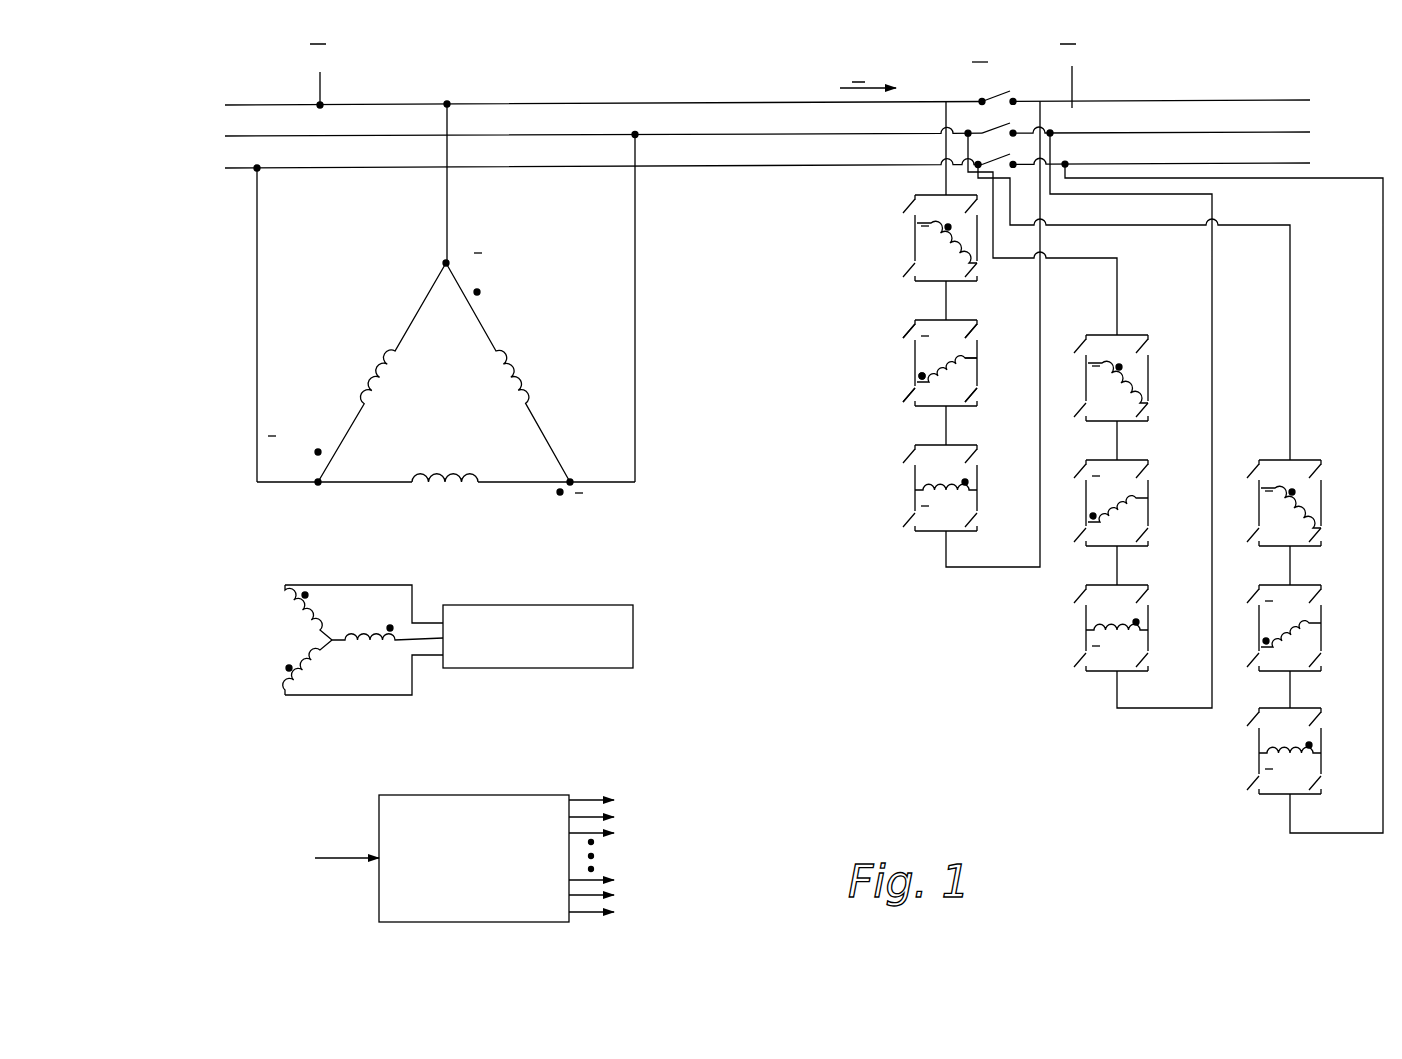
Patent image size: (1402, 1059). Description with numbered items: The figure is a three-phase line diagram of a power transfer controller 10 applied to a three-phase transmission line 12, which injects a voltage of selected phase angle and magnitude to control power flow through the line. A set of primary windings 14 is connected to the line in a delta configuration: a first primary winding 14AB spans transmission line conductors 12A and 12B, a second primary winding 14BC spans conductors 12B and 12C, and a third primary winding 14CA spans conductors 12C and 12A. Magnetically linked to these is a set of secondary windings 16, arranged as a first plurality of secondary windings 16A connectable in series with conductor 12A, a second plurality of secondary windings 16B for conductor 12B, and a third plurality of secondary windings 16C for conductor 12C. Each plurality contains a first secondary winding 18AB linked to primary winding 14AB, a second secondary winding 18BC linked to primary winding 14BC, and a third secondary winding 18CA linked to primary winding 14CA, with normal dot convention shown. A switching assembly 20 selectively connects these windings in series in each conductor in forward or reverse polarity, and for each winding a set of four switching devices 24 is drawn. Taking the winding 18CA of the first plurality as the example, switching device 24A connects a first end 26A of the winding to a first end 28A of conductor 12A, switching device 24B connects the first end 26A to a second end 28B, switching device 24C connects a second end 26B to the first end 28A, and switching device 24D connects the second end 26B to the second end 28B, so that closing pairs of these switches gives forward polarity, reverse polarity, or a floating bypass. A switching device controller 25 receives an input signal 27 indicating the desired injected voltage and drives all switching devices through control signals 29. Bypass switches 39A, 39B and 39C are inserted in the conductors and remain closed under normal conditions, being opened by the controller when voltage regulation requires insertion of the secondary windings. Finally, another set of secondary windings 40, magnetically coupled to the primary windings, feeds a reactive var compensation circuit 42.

The power transfer controller 10 is at (235, 297).
The three-phase transmission line 12 is at (788, 106).
The transmission line conductor 12A is at (340, 104).
The transmission line conductor 12B is at (330, 135).
The transmission line conductor 12C is at (318, 167).
The set of primary windings 14 is at (434, 366).
The first primary winding 14AB is at (502, 352).
The second primary winding 14BC is at (500, 483).
The third primary winding 14CA is at (392, 352).
The set of secondary windings 16 is at (758, 215).
The first plurality of secondary windings 16A is at (952, 366).
The second plurality of secondary windings 16B is at (1082, 692).
The third plurality of secondary windings 16C is at (1242, 810).
The first secondary winding 18AB is at (958, 272).
The third secondary winding 18CA is at (926, 398).
The second secondary winding 18BC is at (930, 487).
The switching assembly 20 is at (805, 266).
The switching devices 24 is at (1099, 483).
The switching device 24A is at (900, 330).
The switching device 24B is at (898, 392).
The switching device 24C is at (975, 340).
The switching device 24D is at (982, 394).
The first end of the secondary winding 26A is at (920, 374).
The second end of the secondary winding 26B is at (966, 360).
The first end of the transmission line conductor 28A is at (946, 300).
The second end of the transmission line conductor 28B is at (946, 424).
The switching device controller 25 is at (430, 795).
The input signal 27 is at (340, 858).
The control signals 29 is at (587, 792).
The switch 39A is at (1026, 88).
The switch 39B is at (1022, 120).
The switch 39C is at (1020, 152).
The set of secondary windings 40 is at (270, 586).
The reactive var compensation circuit 42 is at (455, 668).